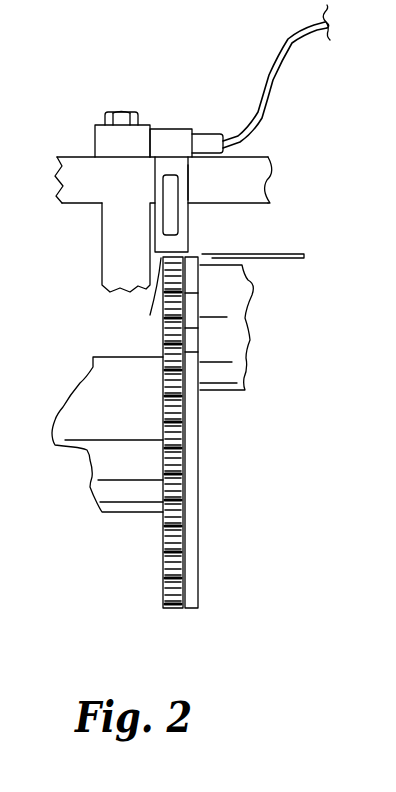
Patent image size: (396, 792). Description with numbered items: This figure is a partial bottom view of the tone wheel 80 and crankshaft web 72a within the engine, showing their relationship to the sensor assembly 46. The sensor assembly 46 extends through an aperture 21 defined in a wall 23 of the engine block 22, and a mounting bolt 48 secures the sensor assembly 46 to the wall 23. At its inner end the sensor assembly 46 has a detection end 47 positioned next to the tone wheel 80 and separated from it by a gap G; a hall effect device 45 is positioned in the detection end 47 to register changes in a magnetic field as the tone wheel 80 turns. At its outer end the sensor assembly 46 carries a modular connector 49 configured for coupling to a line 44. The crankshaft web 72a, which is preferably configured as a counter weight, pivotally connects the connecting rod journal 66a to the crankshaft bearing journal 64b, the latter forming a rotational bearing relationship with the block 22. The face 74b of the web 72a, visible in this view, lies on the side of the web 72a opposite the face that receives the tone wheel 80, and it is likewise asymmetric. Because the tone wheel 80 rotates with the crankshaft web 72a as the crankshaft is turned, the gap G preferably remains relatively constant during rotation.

The aperture 21 is at (184, 192).
The engine block 22 is at (72, 210).
The wall 23 is at (265, 155).
The line 44 is at (288, 46).
The hall effect device 45 is at (176, 190).
The sensor assembly 46 is at (196, 225).
The detection end 47 is at (148, 312).
The mounting bolt 48 is at (118, 111).
The modular connector 49 is at (172, 140).
The gap G is at (308, 255).
The crankshaft bearing journal 64b is at (105, 513).
The connecting rod journal 66a is at (226, 392).
The crankshaft web 72a is at (200, 563).
The face 74b is at (200, 457).
The tone wheel 80 is at (175, 622).